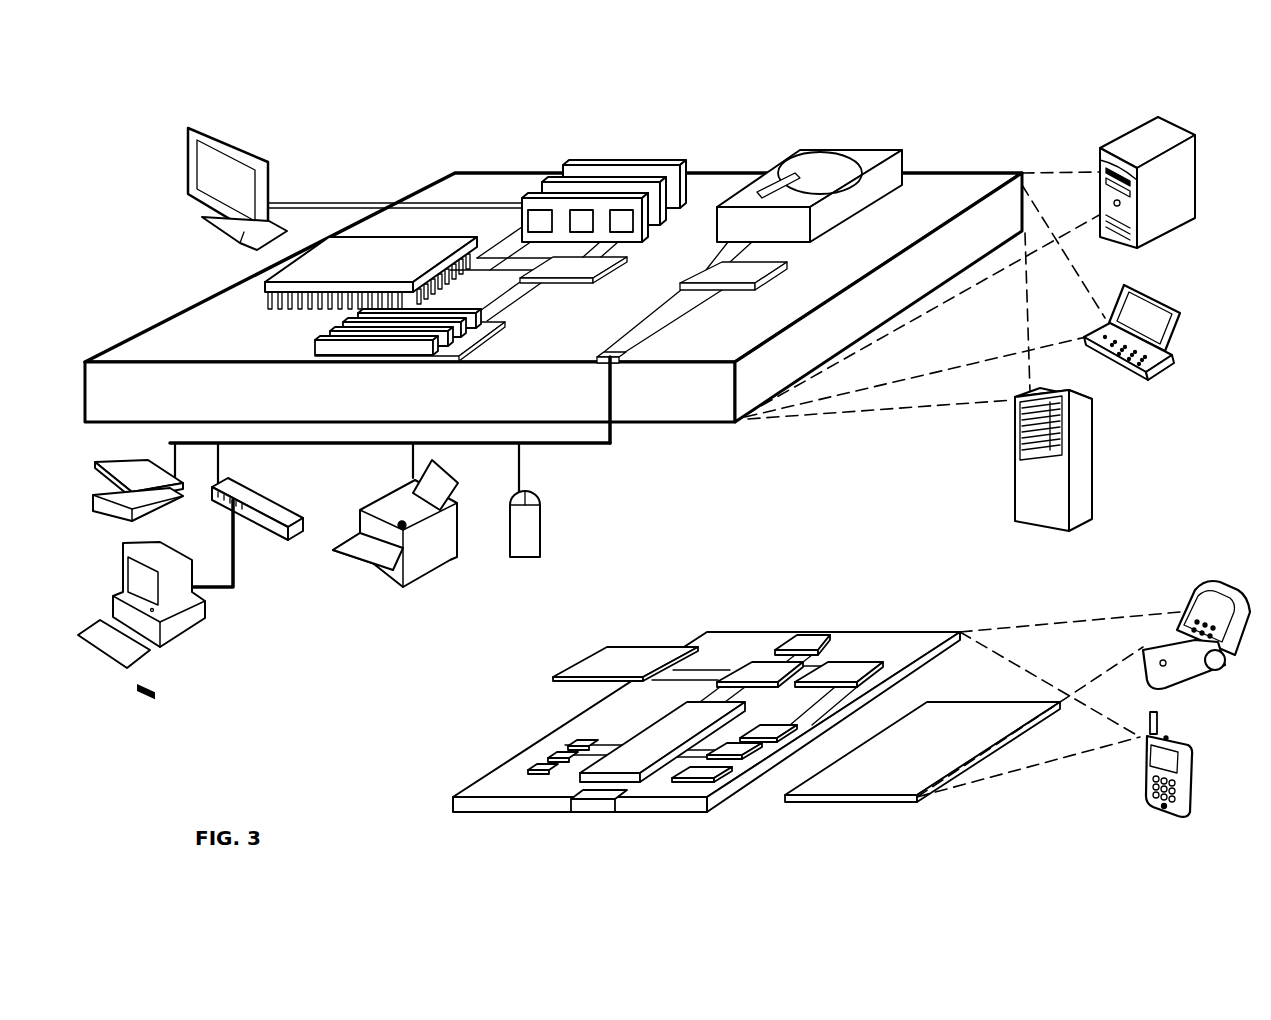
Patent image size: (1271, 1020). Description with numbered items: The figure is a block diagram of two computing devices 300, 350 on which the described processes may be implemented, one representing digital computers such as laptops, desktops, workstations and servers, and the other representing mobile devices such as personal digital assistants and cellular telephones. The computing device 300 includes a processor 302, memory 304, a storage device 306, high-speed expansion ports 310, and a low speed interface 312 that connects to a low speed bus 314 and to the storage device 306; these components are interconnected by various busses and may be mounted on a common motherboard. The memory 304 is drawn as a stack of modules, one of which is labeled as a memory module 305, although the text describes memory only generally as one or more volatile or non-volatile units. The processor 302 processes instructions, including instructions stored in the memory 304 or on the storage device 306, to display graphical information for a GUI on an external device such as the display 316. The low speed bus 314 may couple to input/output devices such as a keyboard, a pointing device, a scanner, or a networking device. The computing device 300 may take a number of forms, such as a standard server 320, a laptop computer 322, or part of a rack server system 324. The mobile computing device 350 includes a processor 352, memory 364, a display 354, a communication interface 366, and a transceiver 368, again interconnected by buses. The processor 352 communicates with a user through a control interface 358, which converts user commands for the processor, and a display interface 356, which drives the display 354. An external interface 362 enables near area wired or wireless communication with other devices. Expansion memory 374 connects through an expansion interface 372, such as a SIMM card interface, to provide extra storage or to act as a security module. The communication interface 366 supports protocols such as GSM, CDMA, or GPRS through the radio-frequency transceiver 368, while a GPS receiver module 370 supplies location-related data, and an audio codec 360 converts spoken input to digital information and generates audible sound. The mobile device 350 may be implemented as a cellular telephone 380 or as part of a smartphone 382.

The computing device 300 is at (1197, 98).
The processor 302 is at (266, 292).
The memory 304 is at (587, 163).
The memory module 305 is at (548, 168).
The storage device 306 is at (814, 148).
The high-speed expansion ports 310 is at (333, 335).
The low speed interface 312 is at (720, 283).
The low speed bus 314 is at (617, 362).
The display 316 is at (194, 126).
The standard server 320 is at (1102, 146).
The laptop computer 322 is at (1143, 373).
The rack server system 324 is at (1014, 468).
The computing device 350 is at (440, 714).
The processor 352 is at (640, 760).
The display 354 is at (893, 778).
The display interface 356 is at (695, 773).
The control interface 358 is at (740, 758).
The audio codec 360 is at (773, 733).
The external interface 362 is at (594, 801).
The memory 364 is at (548, 757).
The communication interface 366 is at (752, 668).
The transceiver 368 is at (845, 670).
The GPS receiver module 370 is at (810, 642).
The expansion interface 372 is at (688, 644).
The expansion memory 374 is at (596, 653).
The cellular phone 380 is at (1193, 587).
The smartphone 382 is at (1140, 770).